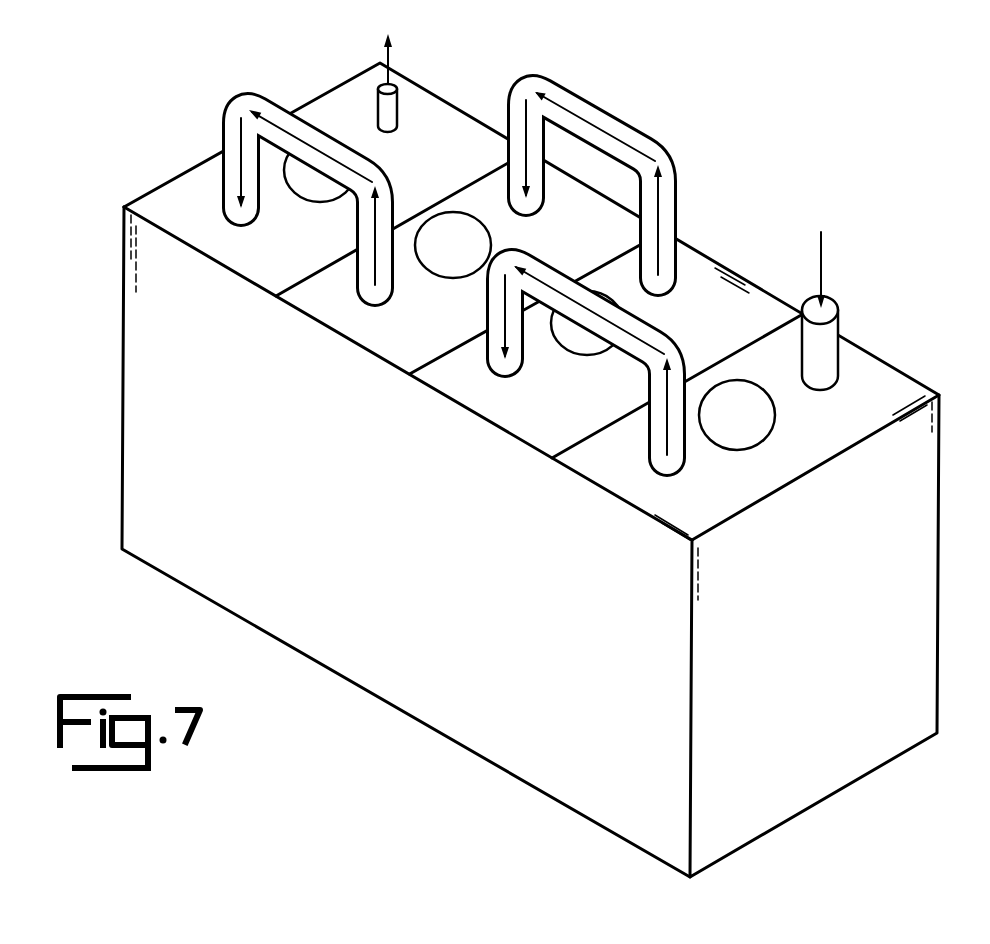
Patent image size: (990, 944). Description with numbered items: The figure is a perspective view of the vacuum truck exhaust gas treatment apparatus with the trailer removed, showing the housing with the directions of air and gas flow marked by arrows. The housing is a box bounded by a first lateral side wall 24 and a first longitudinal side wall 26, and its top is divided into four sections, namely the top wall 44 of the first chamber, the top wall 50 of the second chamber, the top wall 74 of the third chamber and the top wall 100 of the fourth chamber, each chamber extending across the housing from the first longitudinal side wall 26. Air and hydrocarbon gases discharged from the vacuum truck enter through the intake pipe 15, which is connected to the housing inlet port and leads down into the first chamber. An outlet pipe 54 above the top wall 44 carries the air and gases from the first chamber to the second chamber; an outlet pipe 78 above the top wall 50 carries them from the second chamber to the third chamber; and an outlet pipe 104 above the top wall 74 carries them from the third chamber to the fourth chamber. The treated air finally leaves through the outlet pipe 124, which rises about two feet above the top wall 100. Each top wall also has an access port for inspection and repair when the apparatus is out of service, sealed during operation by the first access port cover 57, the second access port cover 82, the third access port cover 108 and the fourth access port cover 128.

The intake pipe 15 is at (840, 317).
The first lateral side wall 24 is at (893, 748).
The first longitudinal side wall 26 is at (606, 810).
The top wall 44 is at (903, 380).
The top wall 50 is at (707, 258).
The outlet pipe 54 is at (653, 437).
The first access port cover 57 is at (772, 417).
The top wall 74 is at (320, 308).
The outlet pipe 78 is at (670, 190).
The second access port cover 82 is at (579, 353).
The top wall 100 is at (208, 250).
The outlet pipe 104 is at (351, 187).
The third access port cover 108 is at (447, 273).
The outlet pipe 124 is at (402, 118).
The fourth access port cover 128 is at (352, 137).